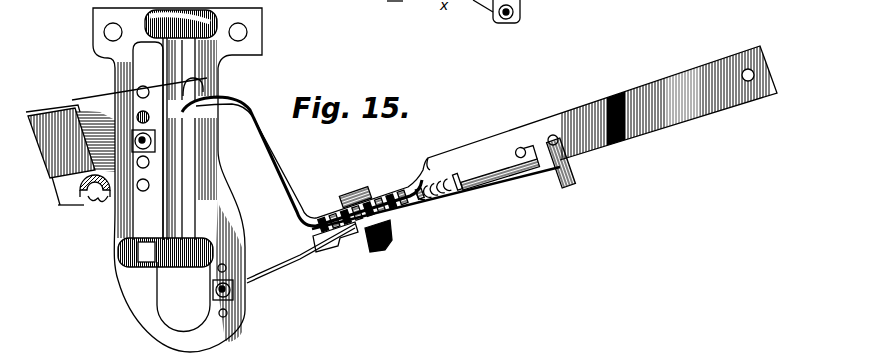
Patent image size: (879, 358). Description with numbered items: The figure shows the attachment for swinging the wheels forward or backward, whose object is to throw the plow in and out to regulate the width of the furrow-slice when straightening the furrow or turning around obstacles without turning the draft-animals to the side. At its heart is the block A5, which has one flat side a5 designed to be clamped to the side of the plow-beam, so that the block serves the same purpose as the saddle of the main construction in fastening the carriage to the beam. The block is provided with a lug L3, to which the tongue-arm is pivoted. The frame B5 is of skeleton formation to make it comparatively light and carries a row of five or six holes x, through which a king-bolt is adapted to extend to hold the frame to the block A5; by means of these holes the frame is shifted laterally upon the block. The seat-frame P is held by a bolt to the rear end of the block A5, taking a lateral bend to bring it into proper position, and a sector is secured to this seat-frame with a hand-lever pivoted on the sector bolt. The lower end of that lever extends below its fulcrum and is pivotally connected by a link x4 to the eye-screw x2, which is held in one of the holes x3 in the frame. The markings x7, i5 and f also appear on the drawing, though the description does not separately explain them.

The block A5 is at (98, 113).
The hole x7 is at (146, 88).
The flat side a5 is at (176, 94).
The holes x is at (183, 140).
The frame B5 is at (219, 192).
The lug L3 is at (70, 161).
The ring i5 is at (95, 194).
The slot f is at (192, 284).
The eye-screw x2 is at (235, 292).
The holes x3 is at (236, 321).
The link x4 is at (403, 225).
The seat-frame P is at (602, 105).